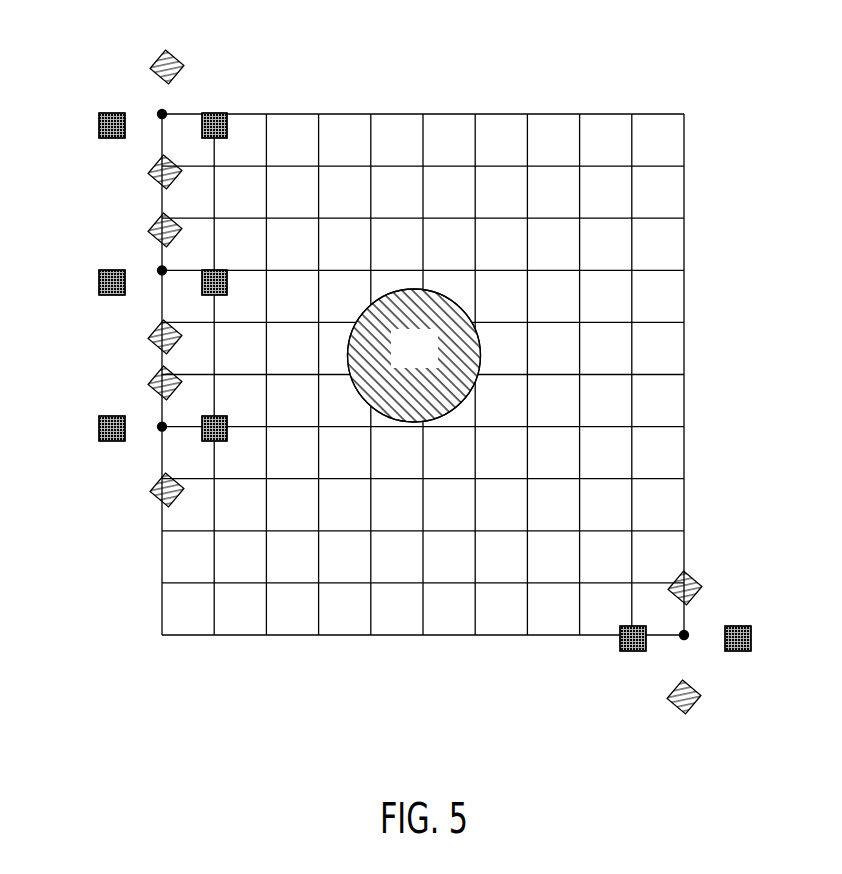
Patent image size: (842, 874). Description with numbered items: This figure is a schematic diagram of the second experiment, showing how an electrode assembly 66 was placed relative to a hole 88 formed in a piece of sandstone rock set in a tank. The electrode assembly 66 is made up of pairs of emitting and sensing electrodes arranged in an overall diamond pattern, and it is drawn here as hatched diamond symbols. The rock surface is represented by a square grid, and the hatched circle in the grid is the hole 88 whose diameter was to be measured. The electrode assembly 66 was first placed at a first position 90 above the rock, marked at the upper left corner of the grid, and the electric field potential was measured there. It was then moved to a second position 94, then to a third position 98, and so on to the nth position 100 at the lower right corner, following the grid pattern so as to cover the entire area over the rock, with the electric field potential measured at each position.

The electrode assembly 66 is at (122, 80).
The hole 88 is at (402, 365).
The first position 90 is at (162, 114).
The second position 94 is at (162, 270).
The third position 98 is at (162, 427).
The nth position 100 is at (686, 634).